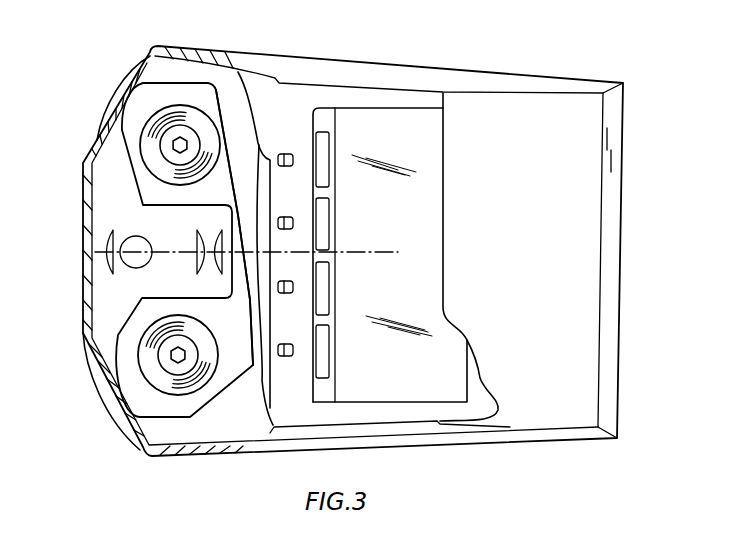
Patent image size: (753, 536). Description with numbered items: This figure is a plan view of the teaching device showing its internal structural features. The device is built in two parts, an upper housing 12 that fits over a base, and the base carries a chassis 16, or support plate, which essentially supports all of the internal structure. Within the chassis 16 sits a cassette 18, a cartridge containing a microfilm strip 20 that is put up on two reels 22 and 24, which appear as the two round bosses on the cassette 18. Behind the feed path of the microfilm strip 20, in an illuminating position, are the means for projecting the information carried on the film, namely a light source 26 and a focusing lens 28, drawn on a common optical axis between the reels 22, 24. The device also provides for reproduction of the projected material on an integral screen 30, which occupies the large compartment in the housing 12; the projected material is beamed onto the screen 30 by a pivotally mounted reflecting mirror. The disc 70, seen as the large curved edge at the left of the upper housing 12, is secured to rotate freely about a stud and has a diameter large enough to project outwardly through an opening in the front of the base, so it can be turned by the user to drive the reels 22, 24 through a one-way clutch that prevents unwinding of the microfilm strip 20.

The upper housing 12 is at (590, 406).
The chassis 16 is at (237, 423).
The cassette 18 is at (220, 388).
The microfilm strip 20 is at (231, 305).
The reel 22 is at (193, 136).
The reel 24 is at (160, 337).
The light source 26 is at (136, 268).
The focusing lens 28 is at (197, 266).
The screen 30 is at (390, 393).
The disc 70 is at (100, 400).